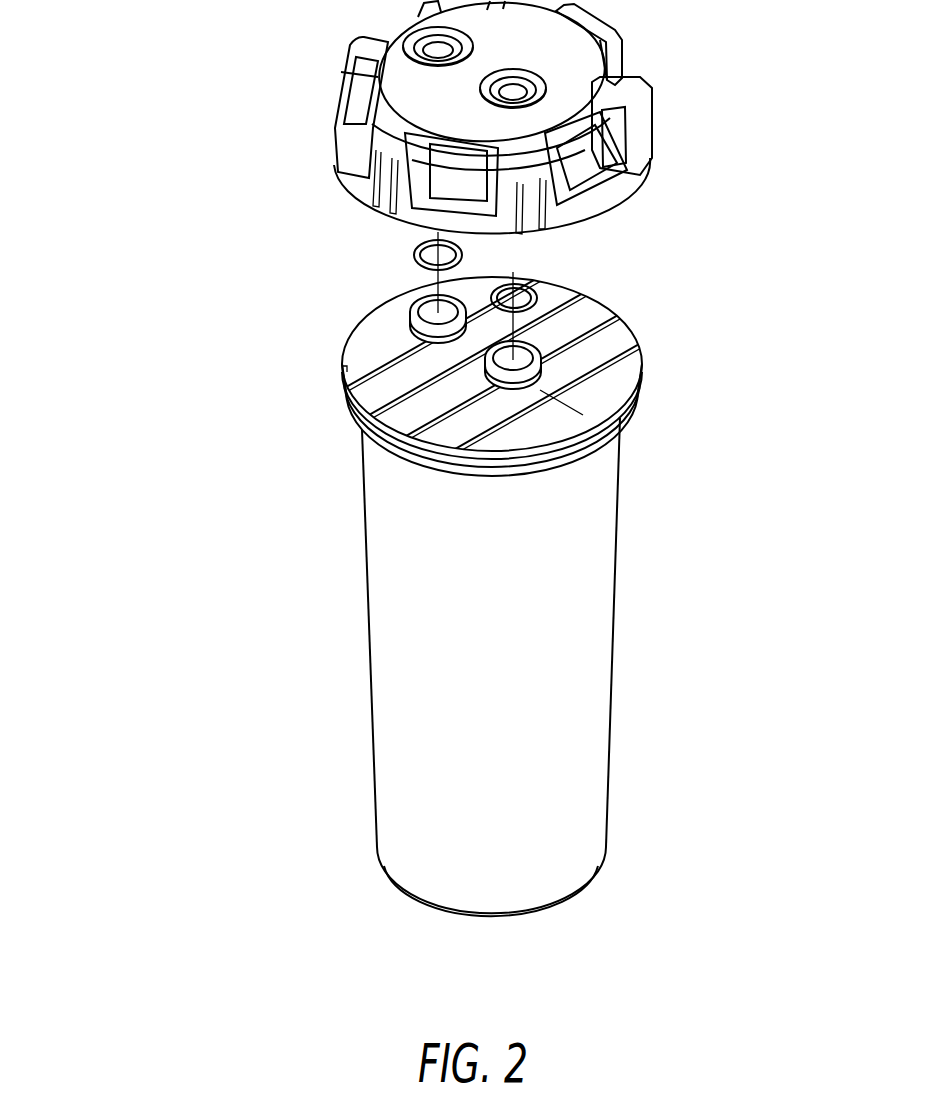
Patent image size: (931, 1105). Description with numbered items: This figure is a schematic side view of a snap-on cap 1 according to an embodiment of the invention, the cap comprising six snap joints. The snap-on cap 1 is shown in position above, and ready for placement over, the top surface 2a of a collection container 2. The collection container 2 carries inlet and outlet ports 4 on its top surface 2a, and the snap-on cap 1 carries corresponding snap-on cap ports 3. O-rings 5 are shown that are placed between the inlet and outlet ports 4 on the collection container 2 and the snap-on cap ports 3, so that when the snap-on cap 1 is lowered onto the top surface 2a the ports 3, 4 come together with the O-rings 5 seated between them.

The snap-on cap 1 is at (306, 107).
The collection container 2 is at (353, 571).
The top surface 2a is at (308, 368).
The snap-on cap ports 3 is at (502, 40).
The inlet and outlet ports 4 is at (485, 320).
The O-rings 5 is at (480, 250).